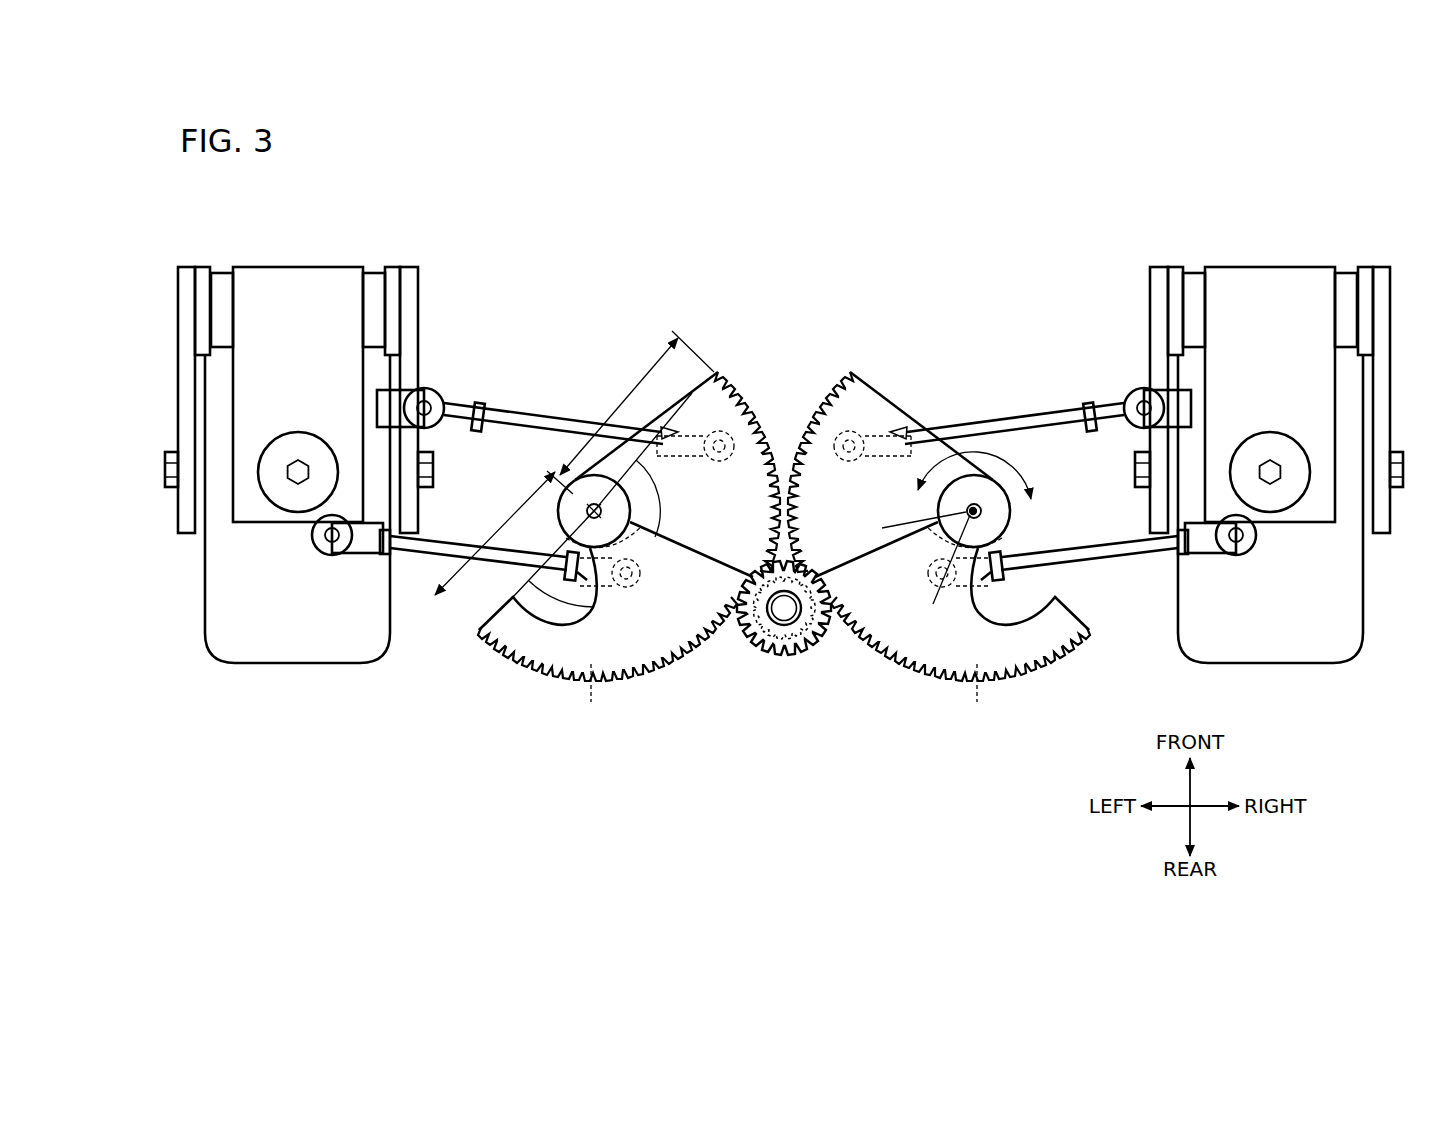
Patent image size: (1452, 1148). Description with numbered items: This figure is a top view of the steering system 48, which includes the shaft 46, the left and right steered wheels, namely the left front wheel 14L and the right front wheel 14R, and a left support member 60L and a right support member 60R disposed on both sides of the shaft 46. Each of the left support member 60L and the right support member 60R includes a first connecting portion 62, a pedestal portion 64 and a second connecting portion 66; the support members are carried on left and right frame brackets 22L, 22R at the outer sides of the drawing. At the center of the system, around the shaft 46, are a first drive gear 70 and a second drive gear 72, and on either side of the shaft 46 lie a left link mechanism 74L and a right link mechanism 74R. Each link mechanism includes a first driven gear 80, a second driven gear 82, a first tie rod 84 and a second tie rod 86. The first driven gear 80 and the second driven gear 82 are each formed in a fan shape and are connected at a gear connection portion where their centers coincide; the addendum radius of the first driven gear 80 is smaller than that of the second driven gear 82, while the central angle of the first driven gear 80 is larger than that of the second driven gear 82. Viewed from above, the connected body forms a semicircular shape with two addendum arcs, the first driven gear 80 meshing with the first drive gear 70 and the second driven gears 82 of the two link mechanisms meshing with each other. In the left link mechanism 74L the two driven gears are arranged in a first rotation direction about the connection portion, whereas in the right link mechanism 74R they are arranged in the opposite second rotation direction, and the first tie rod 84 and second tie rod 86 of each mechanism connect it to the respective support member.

The steering system 48 is at (815, 223).
The left front wheel 14L is at (299, 641).
The right front wheel 14R is at (1269, 641).
The left frame bracket 22L is at (410, 316).
The right frame bracket 22R is at (1158, 316).
The left support member 60L is at (338, 243).
The right support member 60R is at (1231, 243).
The first connecting portion 62 is at (220, 292).
The pedestal portion 64 is at (290, 282).
The second connecting portion 66 is at (298, 433).
The first drive gear 70 is at (792, 648).
The second drive gear 72 is at (799, 632).
The shaft 46 is at (778, 614).
The left link mechanism 74L is at (540, 336).
The right link mechanism 74R is at (1028, 336).
The first driven gear 80 is at (588, 686).
The second driven gear 82 is at (812, 419).
The first tie rod 84 is at (408, 548).
The second tie rod 86 is at (497, 418).